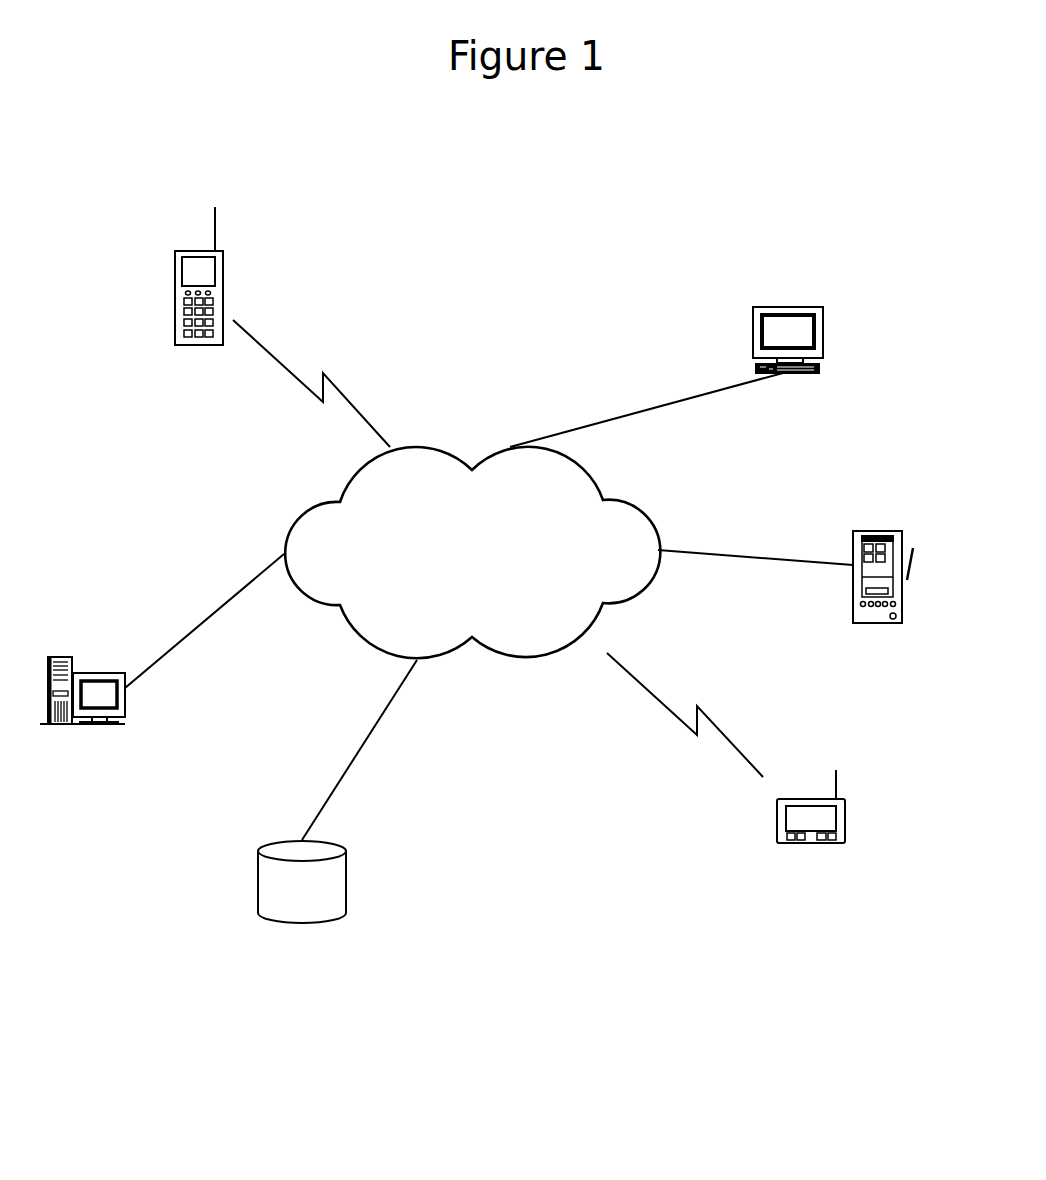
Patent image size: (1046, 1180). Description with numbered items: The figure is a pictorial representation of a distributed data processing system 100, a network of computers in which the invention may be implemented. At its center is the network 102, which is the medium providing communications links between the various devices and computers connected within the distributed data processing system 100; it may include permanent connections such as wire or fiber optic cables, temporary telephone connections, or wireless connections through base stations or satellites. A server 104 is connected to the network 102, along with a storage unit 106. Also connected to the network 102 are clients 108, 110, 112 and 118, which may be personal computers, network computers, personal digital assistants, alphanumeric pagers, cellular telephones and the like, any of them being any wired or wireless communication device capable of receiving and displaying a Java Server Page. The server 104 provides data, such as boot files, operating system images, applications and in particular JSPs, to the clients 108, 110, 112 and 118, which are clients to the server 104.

The distributed data processing system 100 is at (510, 934).
The network 102 is at (490, 565).
The server 104 is at (98, 672).
The storage unit 106 is at (300, 923).
The client 108 is at (787, 308).
The client 110 is at (887, 525).
The client 112 is at (813, 853).
The client 118 is at (223, 262).